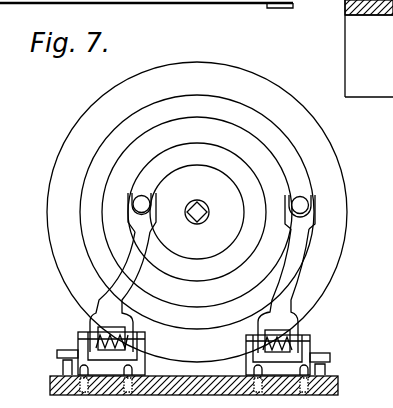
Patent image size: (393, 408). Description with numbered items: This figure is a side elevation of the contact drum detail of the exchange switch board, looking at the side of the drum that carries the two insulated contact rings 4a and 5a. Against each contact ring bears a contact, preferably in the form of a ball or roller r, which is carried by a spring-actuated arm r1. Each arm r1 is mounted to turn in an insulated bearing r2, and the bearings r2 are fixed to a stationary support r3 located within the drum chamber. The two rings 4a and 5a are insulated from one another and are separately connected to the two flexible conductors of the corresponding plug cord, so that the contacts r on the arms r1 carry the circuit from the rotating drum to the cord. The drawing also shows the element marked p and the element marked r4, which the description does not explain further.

The plate p is at (360, 48).
The insulated contact ring 5a is at (197, 212).
The insulated contact ring 4a is at (197, 212).
The stationary support r3 is at (199, 209).
The contact ball or roller r is at (141, 200).
The spring-actuated arm r1 is at (312, 272).
The insulated bearing r2 is at (347, 340).
The base plate r4 is at (186, 386).